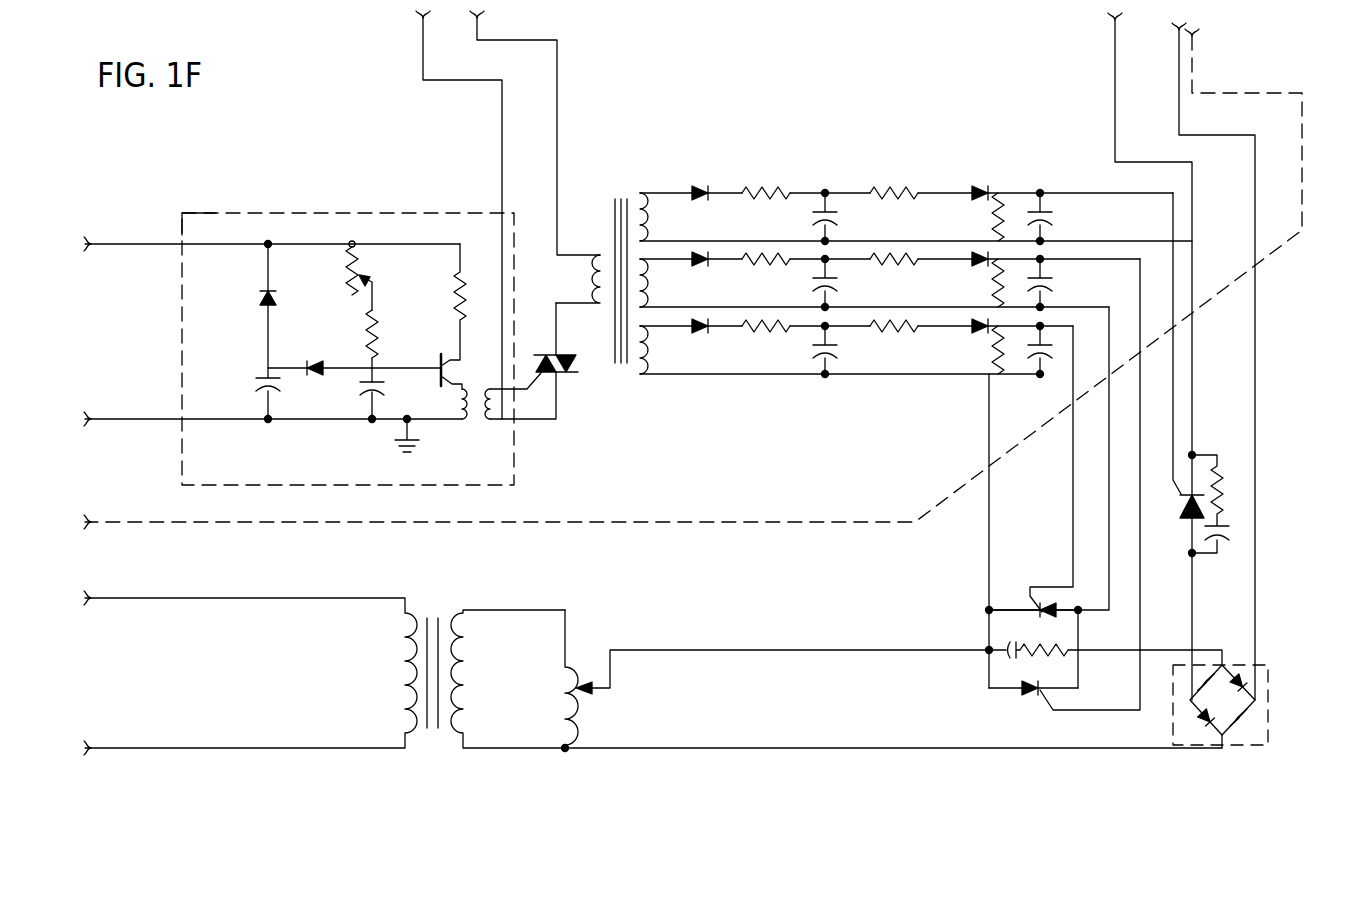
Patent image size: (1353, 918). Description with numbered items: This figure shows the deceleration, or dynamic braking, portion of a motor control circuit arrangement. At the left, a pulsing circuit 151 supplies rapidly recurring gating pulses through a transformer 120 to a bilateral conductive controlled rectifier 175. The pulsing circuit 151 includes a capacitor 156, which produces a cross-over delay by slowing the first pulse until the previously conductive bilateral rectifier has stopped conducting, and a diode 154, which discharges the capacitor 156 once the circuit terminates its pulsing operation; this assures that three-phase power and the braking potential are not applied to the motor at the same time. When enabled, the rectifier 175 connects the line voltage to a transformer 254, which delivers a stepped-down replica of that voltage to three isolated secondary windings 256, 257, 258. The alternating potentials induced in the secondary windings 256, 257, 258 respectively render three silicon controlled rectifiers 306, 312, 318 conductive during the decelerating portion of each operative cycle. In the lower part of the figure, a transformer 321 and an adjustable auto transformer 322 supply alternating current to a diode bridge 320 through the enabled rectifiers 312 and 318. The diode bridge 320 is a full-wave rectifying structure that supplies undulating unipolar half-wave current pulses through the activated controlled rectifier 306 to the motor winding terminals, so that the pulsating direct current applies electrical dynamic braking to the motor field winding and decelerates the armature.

The pulsing circuit 151 is at (307, 192).
The bilateral conductive controlled rectifier 175 is at (603, 341).
The diode 154 is at (261, 299).
The capacitor 156 is at (255, 381).
The transformer 120 is at (477, 427).
The transformer 254 is at (626, 171).
The transformer secondary winding 256 is at (916, 215).
The transformer secondary winding 257 is at (890, 281).
The transformer secondary winding 258 is at (856, 348).
The silicon controlled rectifier 318 is at (1030, 583).
The silicon controlled rectifier 312 is at (1056, 698).
The silicon controlled rectifier 306 is at (1196, 512).
The diode bridge 320 is at (1261, 748).
The transformer 321 is at (451, 581).
The adjustable auto transformer 322 is at (629, 627).